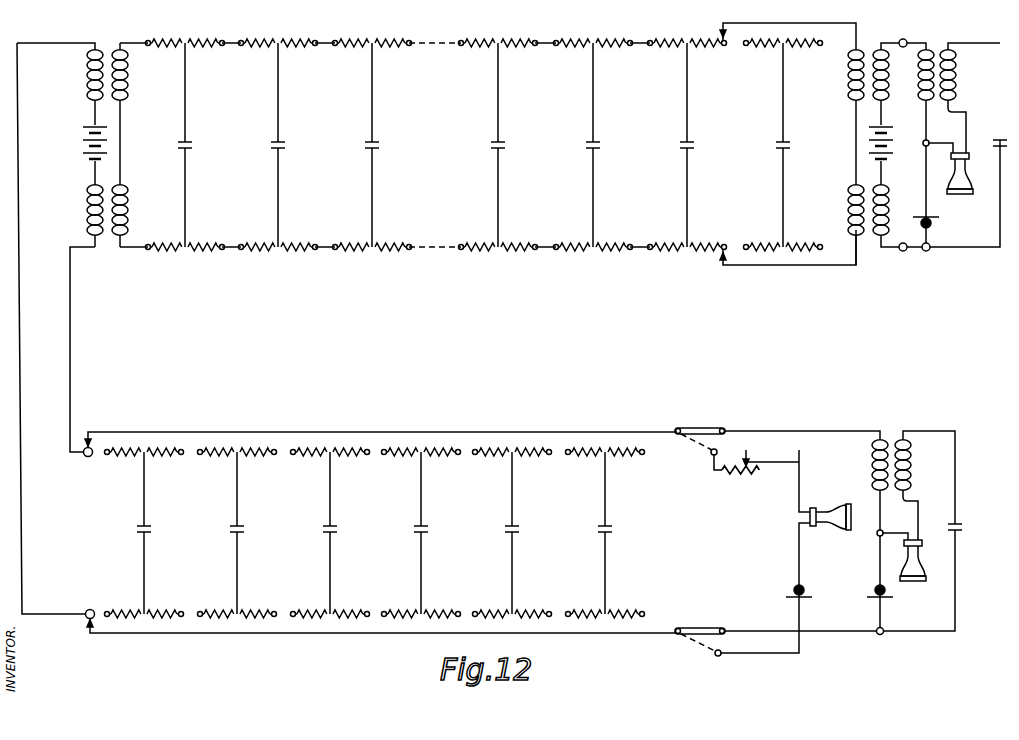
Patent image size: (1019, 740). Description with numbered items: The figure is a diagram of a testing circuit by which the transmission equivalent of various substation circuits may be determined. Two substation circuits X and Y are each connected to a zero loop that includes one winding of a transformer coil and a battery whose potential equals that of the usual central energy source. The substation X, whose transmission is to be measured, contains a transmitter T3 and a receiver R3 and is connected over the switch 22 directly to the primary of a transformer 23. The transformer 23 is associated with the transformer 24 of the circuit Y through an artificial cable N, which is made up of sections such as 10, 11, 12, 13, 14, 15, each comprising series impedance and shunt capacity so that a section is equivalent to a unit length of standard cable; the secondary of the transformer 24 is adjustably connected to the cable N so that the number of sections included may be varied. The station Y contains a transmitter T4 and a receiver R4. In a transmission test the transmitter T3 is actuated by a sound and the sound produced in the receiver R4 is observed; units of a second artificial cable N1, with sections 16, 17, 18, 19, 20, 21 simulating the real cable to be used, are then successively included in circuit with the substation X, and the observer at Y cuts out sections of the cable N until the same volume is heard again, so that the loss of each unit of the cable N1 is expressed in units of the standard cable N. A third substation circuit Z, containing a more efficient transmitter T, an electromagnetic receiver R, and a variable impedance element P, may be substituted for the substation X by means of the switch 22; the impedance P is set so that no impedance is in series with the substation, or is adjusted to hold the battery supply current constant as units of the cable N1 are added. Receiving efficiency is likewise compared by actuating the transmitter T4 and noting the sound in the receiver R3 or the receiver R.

The section of artificial cable N 10 is at (185, 145).
The section of artificial cable N 11 is at (278, 145).
The section of artificial cable N 12 is at (372, 145).
The section of artificial cable N 13 is at (498, 145).
The section of artificial cable N 14 is at (593, 145).
The section of artificial cable N 15 is at (687, 145).
The section of artificial cable N1 16 is at (143, 533).
The section of artificial cable N1 17 is at (237, 533).
The section of artificial cable N1 18 is at (330, 533).
The section of artificial cable N1 19 is at (421, 533).
The section of artificial cable N1 20 is at (512, 533).
The section of artificial cable N1 21 is at (605, 533).
The switch 22 is at (702, 441).
The transformer 23 is at (104, 45).
The transformer 24 is at (867, 47).
The artificial cable N is at (488, 134).
The artificial cable N1 is at (381, 561).
The variable impedance element P is at (756, 477).
The receiver R is at (823, 507).
The transmitter T is at (803, 589).
The substation circuit Z is at (838, 542).
The substation circuit X is at (917, 513).
The substation circuit Y is at (957, 128).
The receiver R3 is at (926, 561).
The transmitter T3 is at (890, 594).
The receiver R4 is at (952, 196).
The transmitter T4 is at (920, 220).